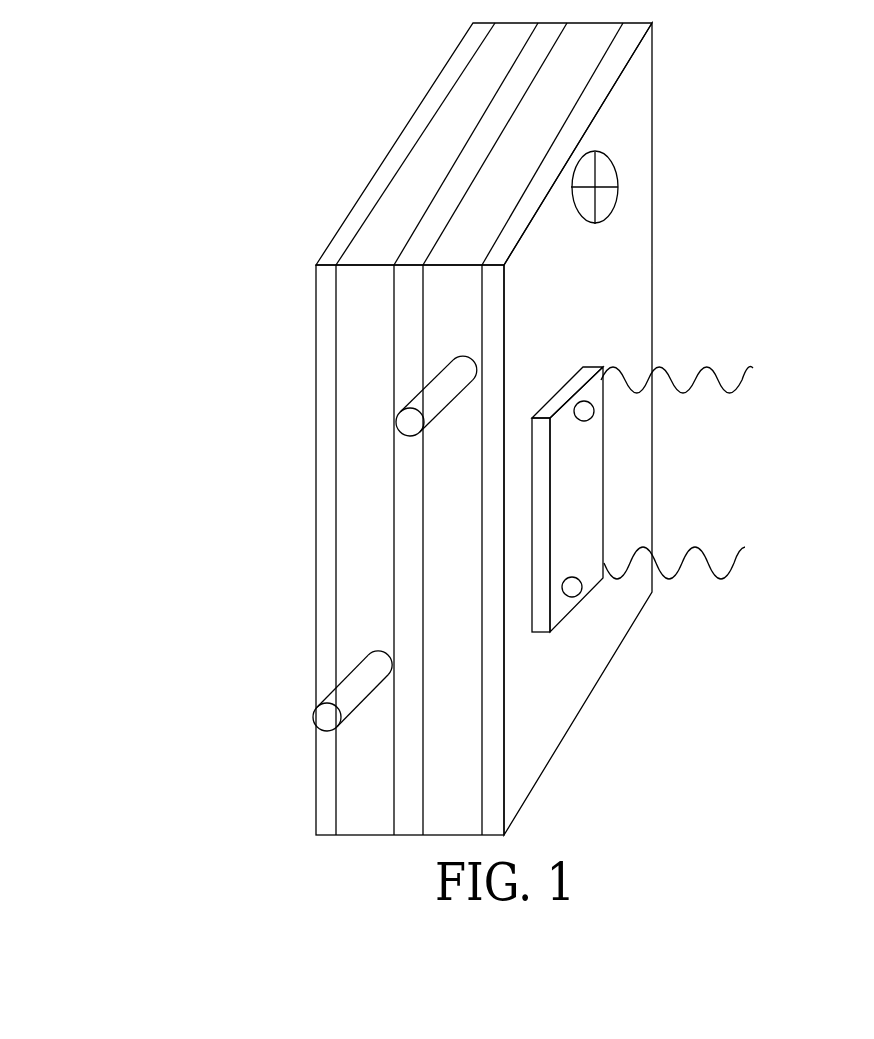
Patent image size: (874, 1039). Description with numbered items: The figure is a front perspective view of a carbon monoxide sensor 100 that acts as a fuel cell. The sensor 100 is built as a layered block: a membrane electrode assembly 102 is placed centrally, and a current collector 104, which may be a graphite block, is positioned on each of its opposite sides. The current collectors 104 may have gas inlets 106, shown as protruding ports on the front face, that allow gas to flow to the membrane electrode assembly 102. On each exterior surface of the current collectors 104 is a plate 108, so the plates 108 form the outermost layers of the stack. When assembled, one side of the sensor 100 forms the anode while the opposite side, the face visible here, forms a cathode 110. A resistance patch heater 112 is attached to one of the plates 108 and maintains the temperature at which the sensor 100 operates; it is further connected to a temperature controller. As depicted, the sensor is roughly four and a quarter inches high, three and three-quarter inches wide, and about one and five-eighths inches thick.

The carbon monoxide sensor 100 is at (588, 664).
The membrane electrode assembly 102 is at (447, 205).
The current collector 104 is at (553, 83).
The gas inlets 106 is at (455, 370).
The plate 108 is at (330, 397).
The cathode 110 is at (607, 197).
The resistance patch heater 112 is at (585, 458).